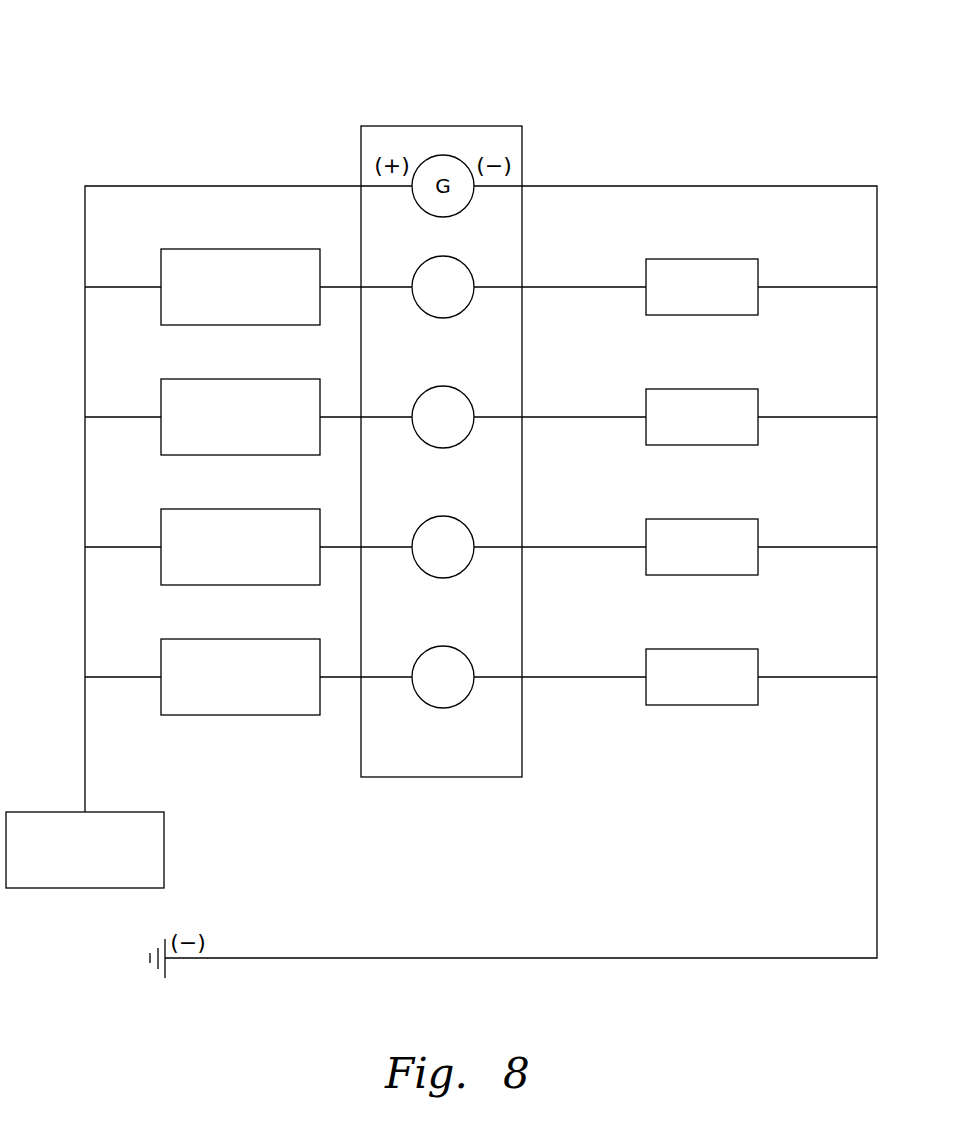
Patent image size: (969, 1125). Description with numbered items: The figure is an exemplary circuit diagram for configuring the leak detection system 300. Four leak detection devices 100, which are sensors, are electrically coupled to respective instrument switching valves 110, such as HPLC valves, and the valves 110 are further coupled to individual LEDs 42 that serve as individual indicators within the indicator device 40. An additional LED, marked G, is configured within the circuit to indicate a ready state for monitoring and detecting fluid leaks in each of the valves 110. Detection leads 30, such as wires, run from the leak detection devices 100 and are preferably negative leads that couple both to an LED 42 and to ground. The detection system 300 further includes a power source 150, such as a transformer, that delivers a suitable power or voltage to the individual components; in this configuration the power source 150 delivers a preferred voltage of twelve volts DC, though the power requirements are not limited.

The leak detection system 300 is at (96, 91).
The instrument switching valve 110 is at (213, 299).
The LED 42 is at (427, 298).
The indicator device 40 is at (427, 760).
The leak detection device 100 is at (675, 302).
The detection lead 30 is at (594, 283).
The power source 150 is at (110, 863).